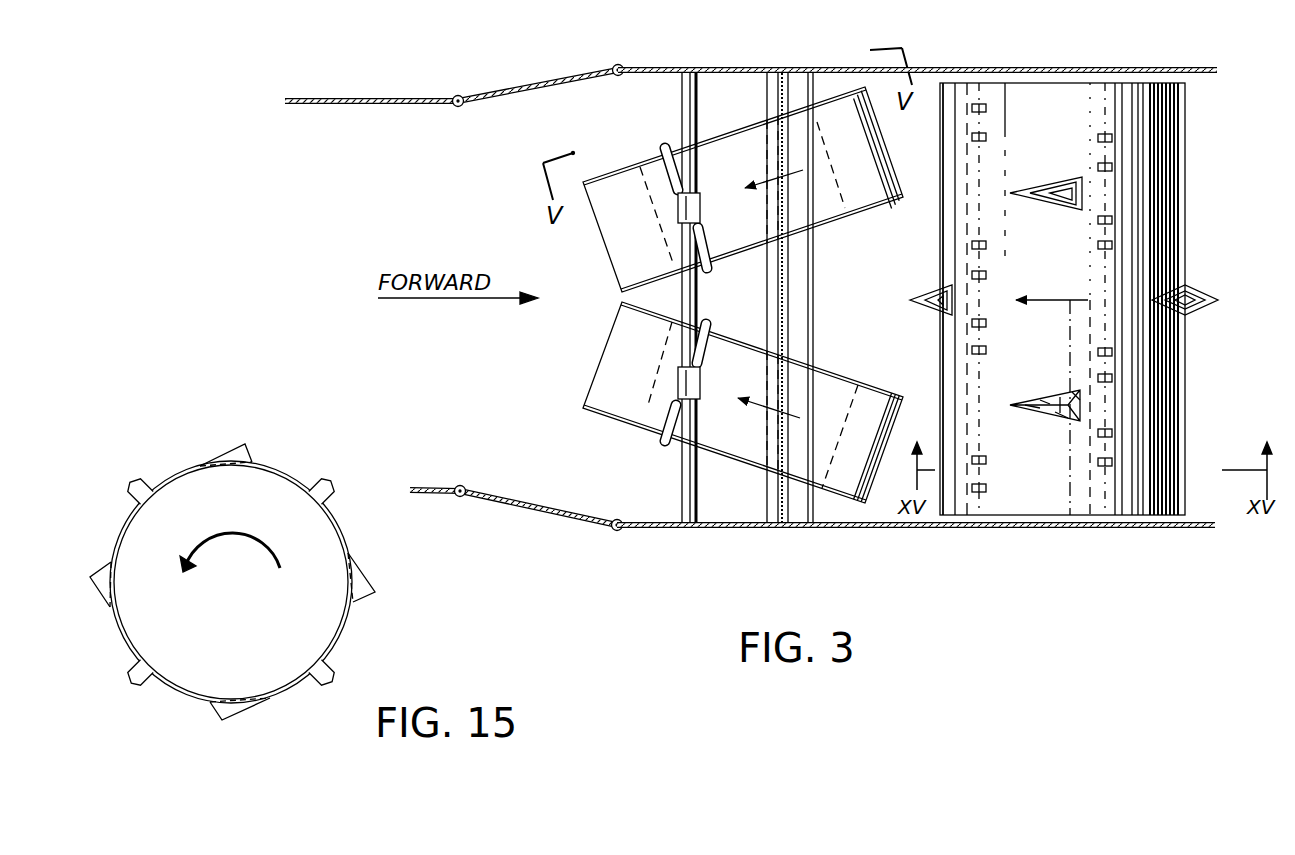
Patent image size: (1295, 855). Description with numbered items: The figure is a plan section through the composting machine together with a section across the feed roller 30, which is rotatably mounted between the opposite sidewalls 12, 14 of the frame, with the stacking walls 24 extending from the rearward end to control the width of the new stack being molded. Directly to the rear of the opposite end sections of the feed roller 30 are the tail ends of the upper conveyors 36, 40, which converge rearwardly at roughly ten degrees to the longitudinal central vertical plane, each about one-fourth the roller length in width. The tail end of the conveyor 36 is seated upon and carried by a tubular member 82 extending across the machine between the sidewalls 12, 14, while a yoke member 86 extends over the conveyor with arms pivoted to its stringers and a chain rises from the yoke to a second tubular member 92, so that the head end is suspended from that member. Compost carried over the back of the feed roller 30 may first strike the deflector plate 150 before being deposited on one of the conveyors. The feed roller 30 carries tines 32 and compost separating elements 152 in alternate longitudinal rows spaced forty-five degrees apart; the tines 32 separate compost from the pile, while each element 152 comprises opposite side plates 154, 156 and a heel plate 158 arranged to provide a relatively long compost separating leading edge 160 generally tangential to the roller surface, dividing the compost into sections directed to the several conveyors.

In FIG. 3, the sidewall 12 is at (1035, 68).
In FIG. 3, the sidewall 14 is at (1073, 529).
In FIG. 3, the stacking wall 24 is at (389, 99).
In FIG. 3, the feed roller 30 is at (1055, 242).
In FIG. 15, the feed roller 30 is at (352, 632).
In FIG. 3, the tines 32 is at (1105, 133).
In FIG. 15, the tines 32 is at (143, 480).
In FIG. 3, the conveyor 36 is at (728, 245).
In FIG. 3, the conveyor 40 is at (728, 448).
In FIG. 3, the tubular member 82 is at (774, 335).
In FIG. 3, the yoke member 86 is at (666, 146).
In FIG. 3, the tubular member 92 is at (684, 484).
In FIG. 3, the deflector plate 150 is at (815, 292).
In FIG. 3, the compost separating element 152 is at (1040, 196).
In FIG. 15, the compost separating element 152 is at (230, 450).
In FIG. 3, the side plate 154 is at (1062, 416).
In FIG. 3, the side plate 156 is at (1052, 400).
In FIG. 3, the heel plate 158 is at (1076, 393).
In FIG. 3, the compost separating leading edge 160 is at (1035, 410).